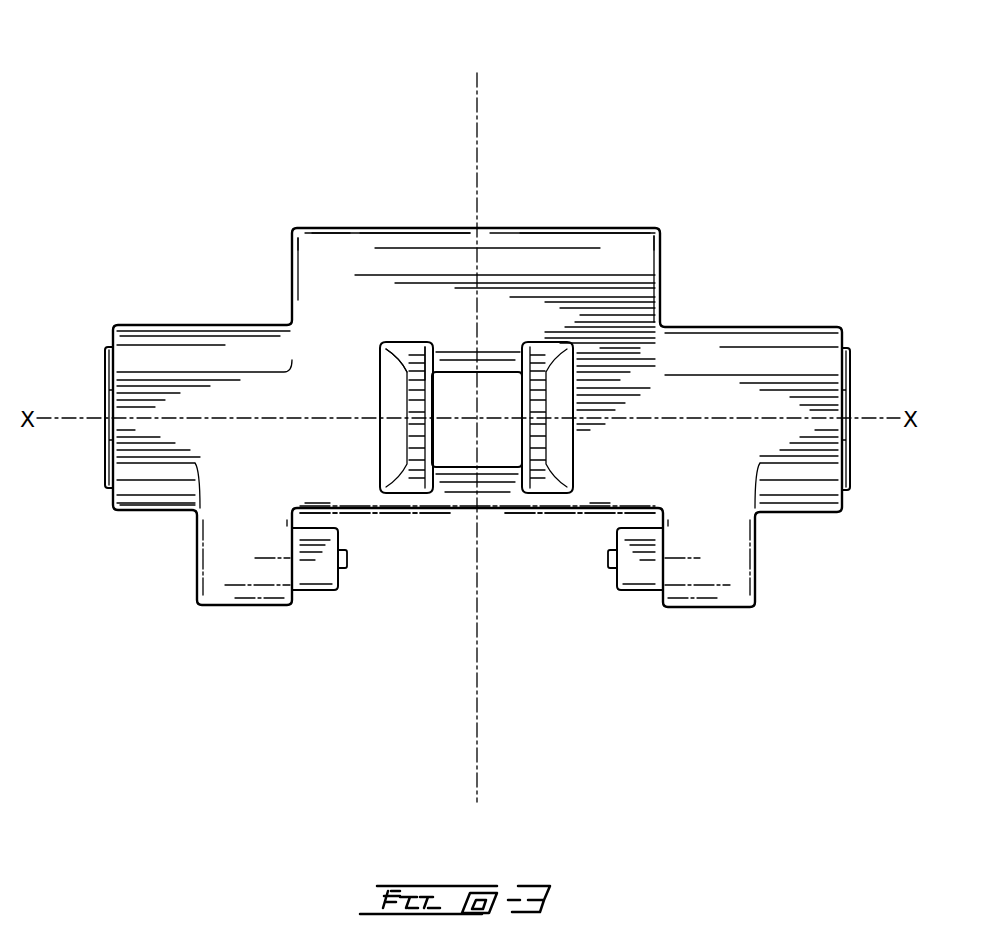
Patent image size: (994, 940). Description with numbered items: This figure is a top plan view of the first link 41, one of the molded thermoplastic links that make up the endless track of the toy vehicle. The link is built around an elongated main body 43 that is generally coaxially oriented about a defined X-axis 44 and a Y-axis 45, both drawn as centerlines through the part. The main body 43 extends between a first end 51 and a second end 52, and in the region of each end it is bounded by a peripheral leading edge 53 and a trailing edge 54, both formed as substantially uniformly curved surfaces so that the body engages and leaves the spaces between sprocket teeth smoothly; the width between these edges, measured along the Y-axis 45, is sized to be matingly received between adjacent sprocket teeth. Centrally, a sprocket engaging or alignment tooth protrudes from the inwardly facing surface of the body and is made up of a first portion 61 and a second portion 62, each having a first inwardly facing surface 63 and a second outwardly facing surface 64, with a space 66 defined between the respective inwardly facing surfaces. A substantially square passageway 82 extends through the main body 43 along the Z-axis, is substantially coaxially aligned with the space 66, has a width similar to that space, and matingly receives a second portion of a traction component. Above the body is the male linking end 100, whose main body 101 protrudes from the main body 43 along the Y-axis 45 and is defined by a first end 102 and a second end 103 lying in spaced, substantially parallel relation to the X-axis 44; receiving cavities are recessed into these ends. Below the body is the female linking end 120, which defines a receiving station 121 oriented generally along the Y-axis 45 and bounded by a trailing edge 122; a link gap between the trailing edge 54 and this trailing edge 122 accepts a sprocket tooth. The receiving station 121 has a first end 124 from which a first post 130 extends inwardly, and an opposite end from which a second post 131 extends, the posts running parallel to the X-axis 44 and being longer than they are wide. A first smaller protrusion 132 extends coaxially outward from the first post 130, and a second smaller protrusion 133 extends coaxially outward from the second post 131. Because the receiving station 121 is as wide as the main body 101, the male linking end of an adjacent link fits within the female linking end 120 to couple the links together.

The first link 41 is at (338, 92).
The main body 43 is at (688, 400).
The X-axis 44 is at (70, 415).
The Y-axis 45 is at (478, 120).
The first end 51 is at (150, 357).
The second end 52 is at (805, 358).
The leading edge 53 is at (198, 318).
The trailing edge 54 is at (158, 512).
The first portion 61 is at (405, 435).
The second portion 62 is at (550, 430).
The first inwardly facing surface 63 is at (443, 352).
The second outwardly facing surface 64 is at (380, 380).
The space 66 is at (492, 486).
The passageway 82 is at (465, 397).
The male linking end 100 is at (312, 228).
The main body 101 is at (605, 228).
The first end 102 is at (293, 250).
The second end 103 is at (665, 248).
The female linking end 120 is at (517, 633).
The receiving station 121 is at (455, 600).
The trailing edge 122 is at (247, 610).
The first end 124 is at (707, 610).
The first post 130 is at (317, 592).
The second post 131 is at (632, 594).
The first smaller protrusion 132 is at (349, 558).
The second smaller protrusion 133 is at (606, 558).